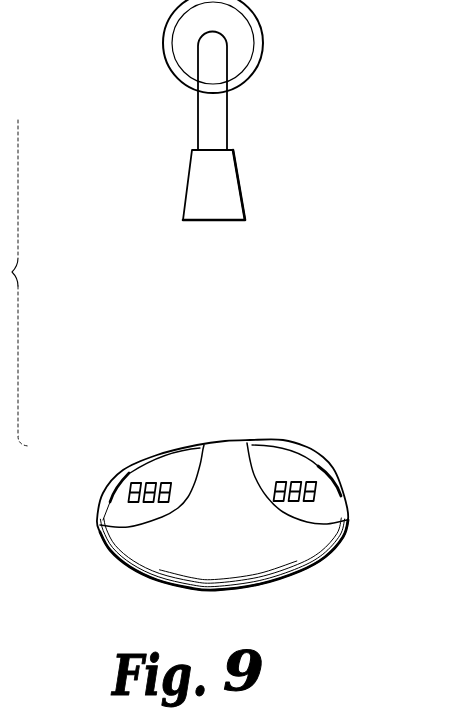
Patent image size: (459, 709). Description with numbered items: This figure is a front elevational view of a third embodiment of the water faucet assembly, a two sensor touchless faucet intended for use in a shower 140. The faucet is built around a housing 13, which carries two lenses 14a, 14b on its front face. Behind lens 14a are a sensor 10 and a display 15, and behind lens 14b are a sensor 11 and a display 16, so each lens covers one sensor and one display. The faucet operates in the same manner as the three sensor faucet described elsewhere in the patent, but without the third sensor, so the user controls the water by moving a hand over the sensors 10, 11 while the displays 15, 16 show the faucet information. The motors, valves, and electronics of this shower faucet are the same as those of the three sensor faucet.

The sensor 10 is at (343, 486).
The sensor 11 is at (108, 486).
The housing 13 is at (300, 575).
The lens 14a is at (320, 466).
The lens 14b is at (135, 462).
The display 15 is at (295, 477).
The display 16 is at (153, 478).
The shower 140 is at (238, 182).